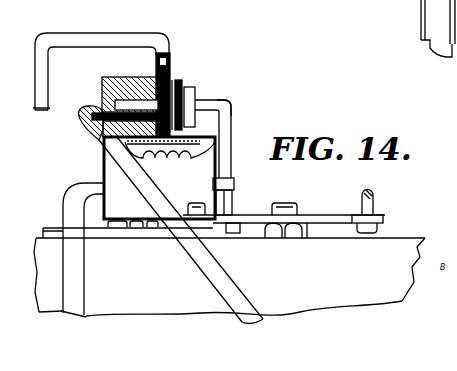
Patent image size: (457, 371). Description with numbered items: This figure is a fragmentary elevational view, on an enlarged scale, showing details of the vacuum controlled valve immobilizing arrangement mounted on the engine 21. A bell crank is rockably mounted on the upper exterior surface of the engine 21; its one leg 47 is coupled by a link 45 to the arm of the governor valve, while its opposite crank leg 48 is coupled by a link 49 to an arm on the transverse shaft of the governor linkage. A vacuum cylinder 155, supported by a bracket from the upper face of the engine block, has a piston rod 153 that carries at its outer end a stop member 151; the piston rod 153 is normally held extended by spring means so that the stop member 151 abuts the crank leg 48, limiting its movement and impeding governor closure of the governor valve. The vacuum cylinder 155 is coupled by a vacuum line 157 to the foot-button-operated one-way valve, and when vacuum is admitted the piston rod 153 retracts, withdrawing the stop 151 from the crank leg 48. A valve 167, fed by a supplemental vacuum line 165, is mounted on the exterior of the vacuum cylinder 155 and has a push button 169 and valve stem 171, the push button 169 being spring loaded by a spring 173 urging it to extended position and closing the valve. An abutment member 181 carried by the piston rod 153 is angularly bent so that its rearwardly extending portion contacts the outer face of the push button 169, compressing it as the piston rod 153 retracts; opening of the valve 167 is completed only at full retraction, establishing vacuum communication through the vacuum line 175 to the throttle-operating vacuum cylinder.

The engine 21 is at (397, 252).
The link 45 is at (374, 207).
The leg of bell crank 47 is at (340, 215).
The crank leg 48 is at (218, 233).
The link 49 is at (157, 240).
The stop member 151 is at (234, 192).
The piston rod 153 is at (233, 180).
The vacuum cylinder 155 is at (100, 175).
The vacuum line 157 is at (75, 264).
The supplemental vacuum line 165 is at (106, 40).
The valve 167 is at (140, 76).
The push button 169 is at (196, 102).
The valve stem 171 is at (103, 95).
The spring 173 is at (183, 82).
The vacuum line 175 is at (133, 182).
The abutment member 181 is at (229, 112).